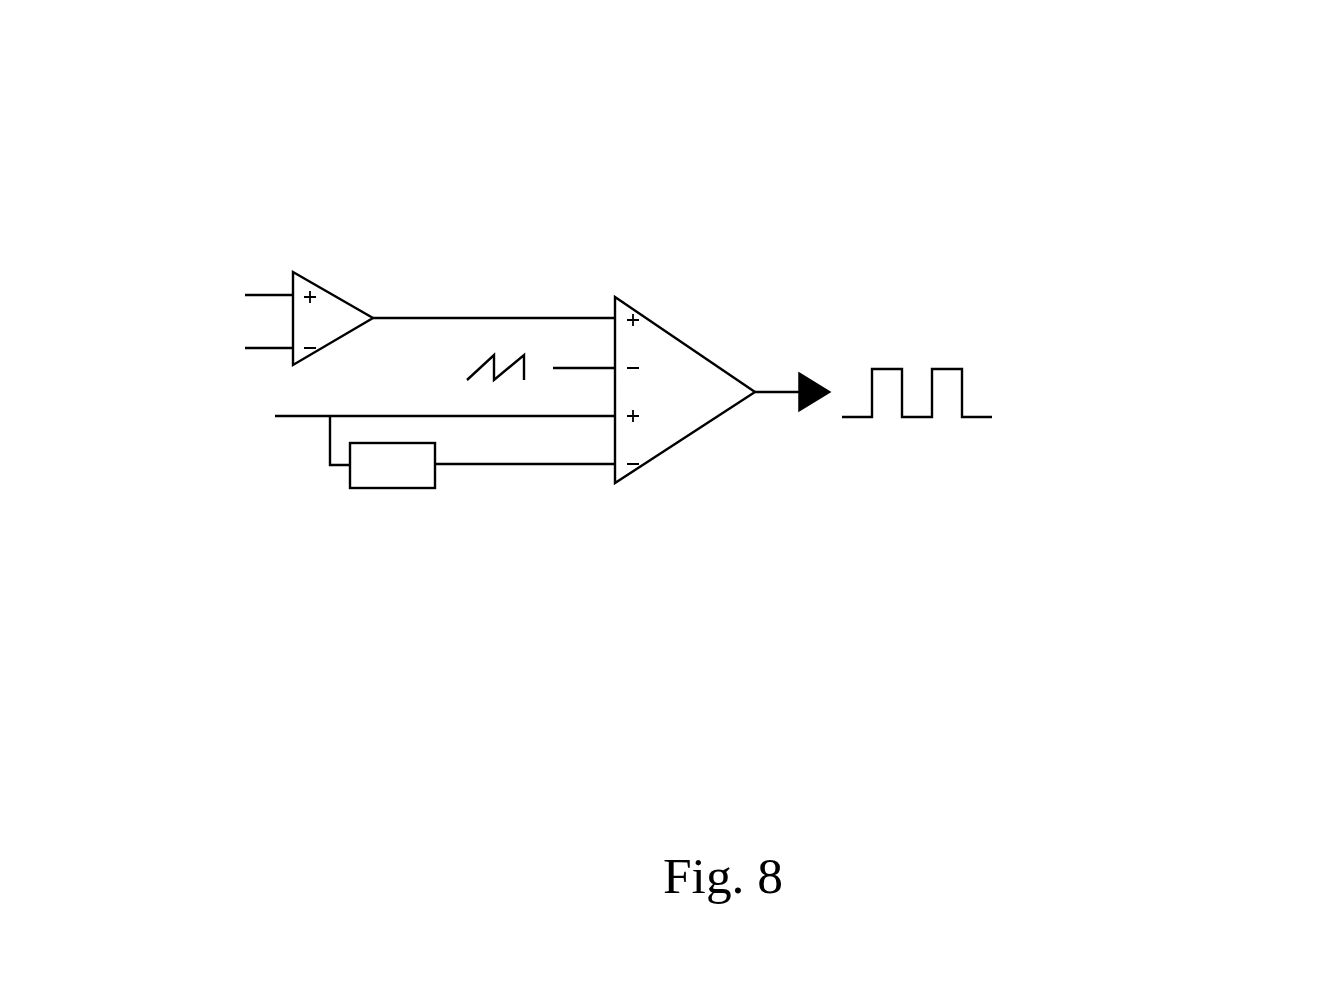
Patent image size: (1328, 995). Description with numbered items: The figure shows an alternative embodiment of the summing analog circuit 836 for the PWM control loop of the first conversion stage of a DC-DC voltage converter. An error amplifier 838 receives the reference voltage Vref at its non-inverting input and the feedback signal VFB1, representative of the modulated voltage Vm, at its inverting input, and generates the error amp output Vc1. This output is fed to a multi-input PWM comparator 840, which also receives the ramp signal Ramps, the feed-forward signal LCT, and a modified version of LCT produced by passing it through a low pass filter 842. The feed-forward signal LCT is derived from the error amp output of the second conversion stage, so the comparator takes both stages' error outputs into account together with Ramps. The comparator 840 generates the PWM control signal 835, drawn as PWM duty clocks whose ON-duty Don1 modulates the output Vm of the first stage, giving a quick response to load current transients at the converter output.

The PWM control signal 835 is at (778, 392).
The summing analog circuit 836 is at (963, 130).
The error amplifier 838 is at (335, 296).
The multi-input PWM comparator 840 is at (685, 345).
The low pass filter 842 is at (350, 478).